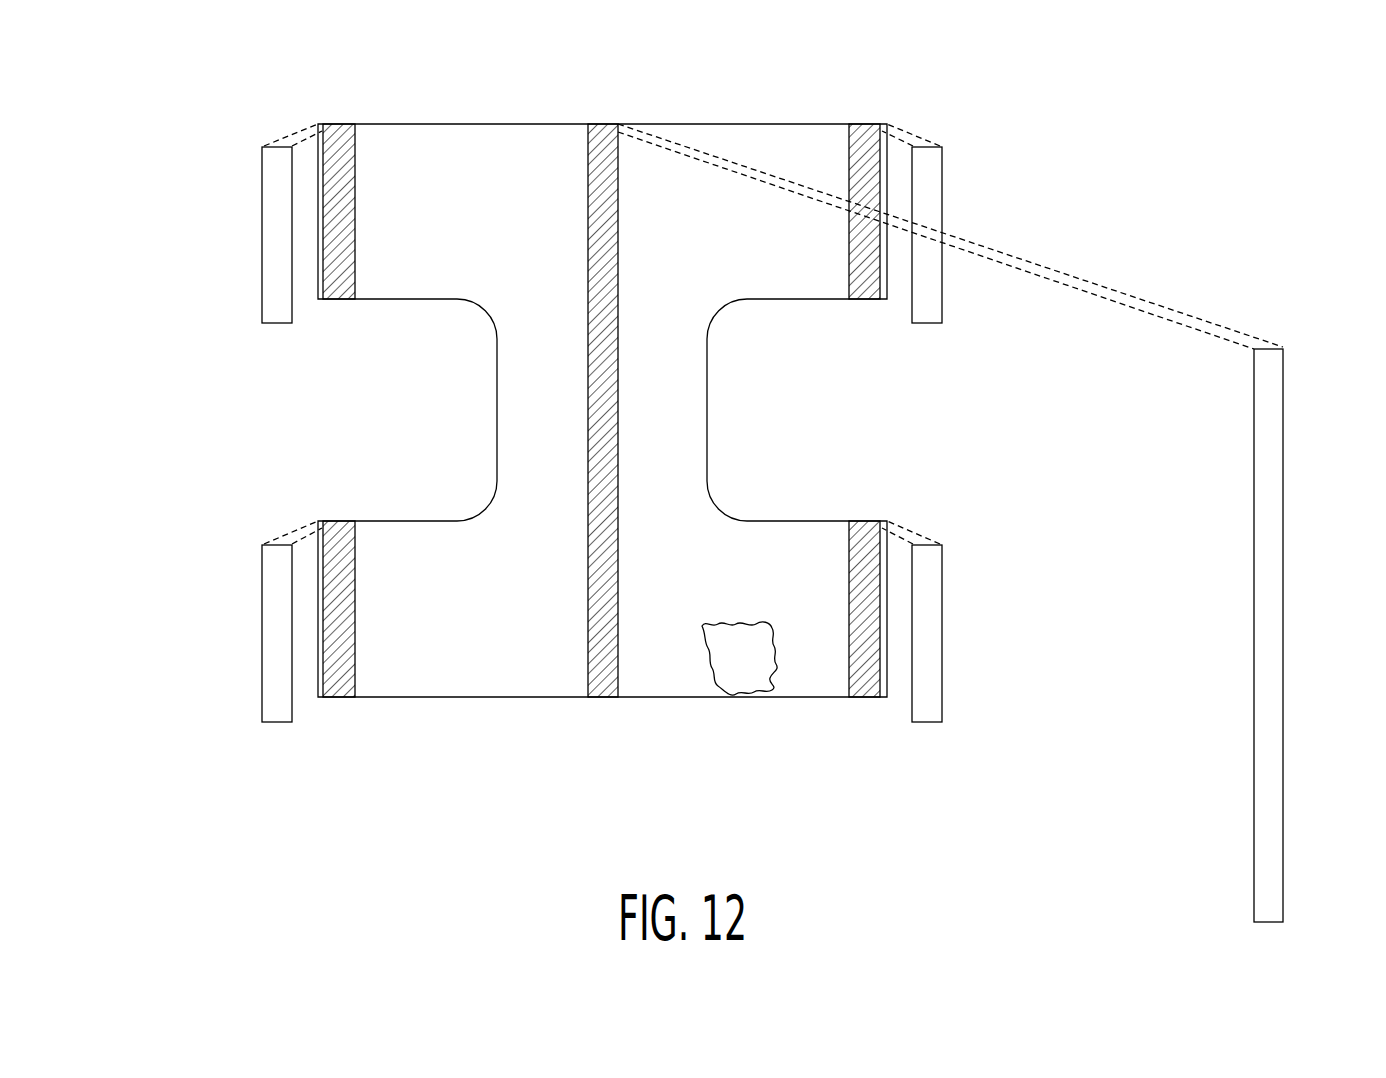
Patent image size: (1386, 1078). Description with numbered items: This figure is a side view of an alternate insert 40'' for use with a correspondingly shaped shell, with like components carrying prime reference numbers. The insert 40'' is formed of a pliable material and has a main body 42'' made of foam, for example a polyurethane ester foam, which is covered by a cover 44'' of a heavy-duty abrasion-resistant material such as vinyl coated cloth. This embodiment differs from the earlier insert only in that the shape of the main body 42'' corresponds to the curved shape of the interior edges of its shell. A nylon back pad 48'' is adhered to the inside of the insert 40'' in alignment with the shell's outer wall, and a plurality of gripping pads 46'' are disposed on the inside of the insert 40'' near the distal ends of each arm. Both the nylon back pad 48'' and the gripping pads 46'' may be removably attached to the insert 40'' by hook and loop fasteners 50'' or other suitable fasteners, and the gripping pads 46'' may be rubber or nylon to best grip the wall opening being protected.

The insert 40'' is at (602, 418).
The main body 42'' is at (769, 700).
The cover 44'' is at (601, 410).
The gripping pads 46'' is at (599, 427).
The nylon back pad 48'' is at (997, 523).
The hook and loop fasteners 50'' is at (582, 469).